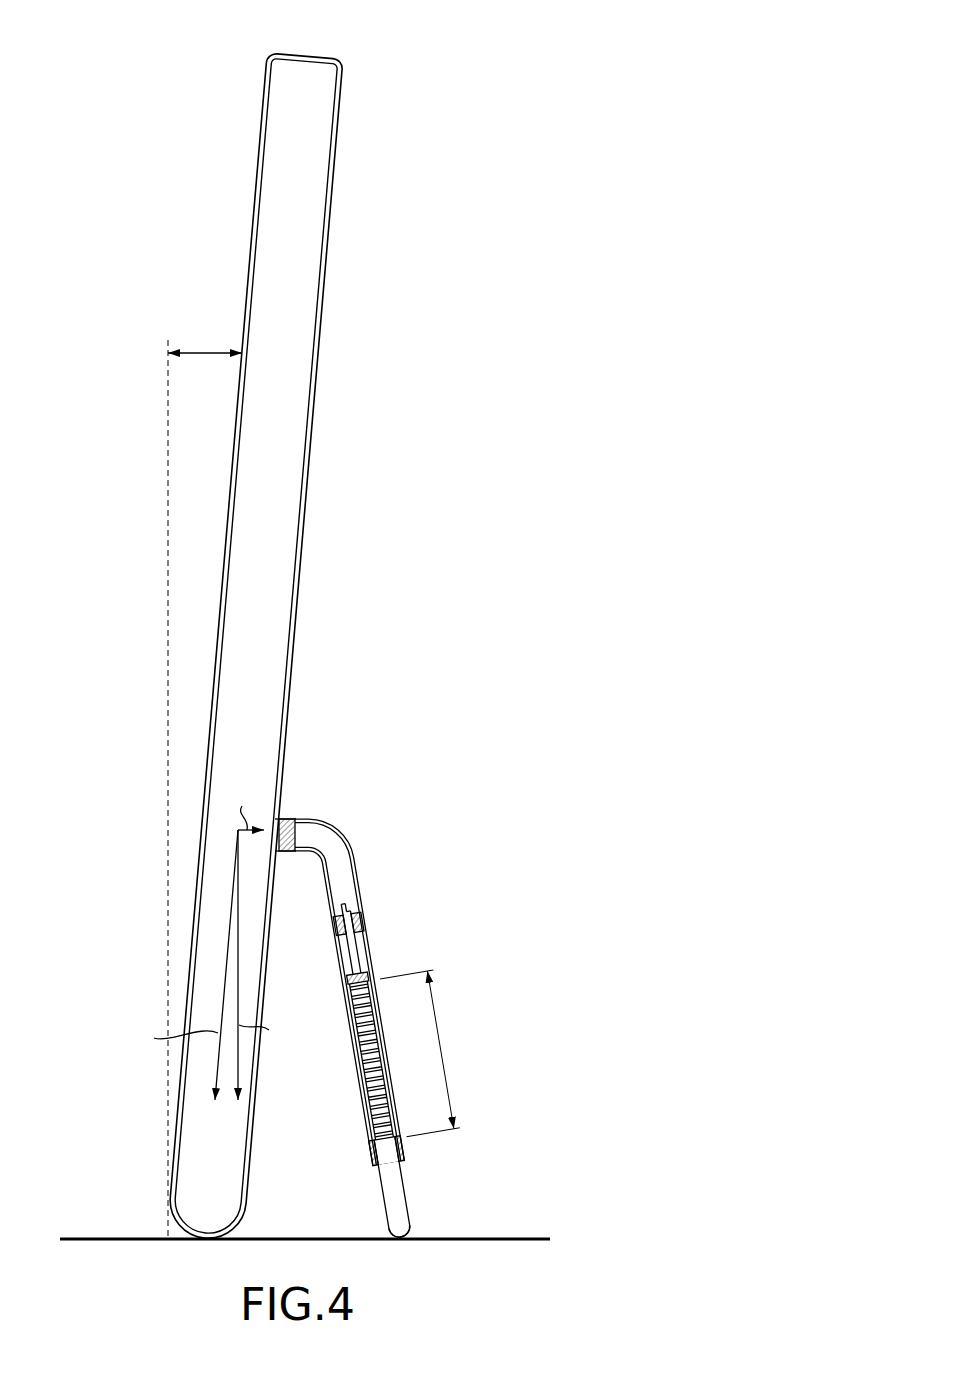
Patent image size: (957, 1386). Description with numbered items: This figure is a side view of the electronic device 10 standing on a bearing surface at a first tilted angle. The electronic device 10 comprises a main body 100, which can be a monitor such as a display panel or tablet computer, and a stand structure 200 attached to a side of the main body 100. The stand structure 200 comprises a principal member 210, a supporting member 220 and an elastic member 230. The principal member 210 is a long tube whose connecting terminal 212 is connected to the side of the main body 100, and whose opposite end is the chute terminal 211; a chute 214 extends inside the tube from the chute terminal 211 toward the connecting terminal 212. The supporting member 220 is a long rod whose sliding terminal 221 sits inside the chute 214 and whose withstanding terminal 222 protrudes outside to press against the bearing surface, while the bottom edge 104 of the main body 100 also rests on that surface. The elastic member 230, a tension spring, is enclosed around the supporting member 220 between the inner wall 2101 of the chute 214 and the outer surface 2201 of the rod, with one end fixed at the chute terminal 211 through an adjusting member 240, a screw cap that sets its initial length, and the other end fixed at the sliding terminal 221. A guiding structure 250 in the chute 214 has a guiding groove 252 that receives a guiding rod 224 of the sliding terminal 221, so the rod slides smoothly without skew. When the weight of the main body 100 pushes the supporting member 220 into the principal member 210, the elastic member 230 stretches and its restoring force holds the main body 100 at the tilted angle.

The electronic device 10 is at (587, 34).
The main body 100 is at (249, 192).
The bottom edge 104 is at (238, 1229).
The stand structure 200 is at (457, 928).
The principal member 210 is at (356, 881).
The inner wall 2101 is at (356, 1063).
The chute terminal 211 is at (403, 1148).
The connecting terminal 212 is at (289, 820).
The chute 214 is at (376, 1049).
The supporting member 220 is at (404, 1195).
The outer surface 2201 is at (369, 1113).
The sliding terminal 221 is at (349, 986).
The withstanding terminal 222 is at (409, 1235).
The guiding rod 224 is at (357, 953).
The elastic member 230 is at (361, 1010).
The adjusting member 240 is at (374, 1165).
The guiding structure 250 is at (362, 924).
The guiding groove 252 is at (336, 922).